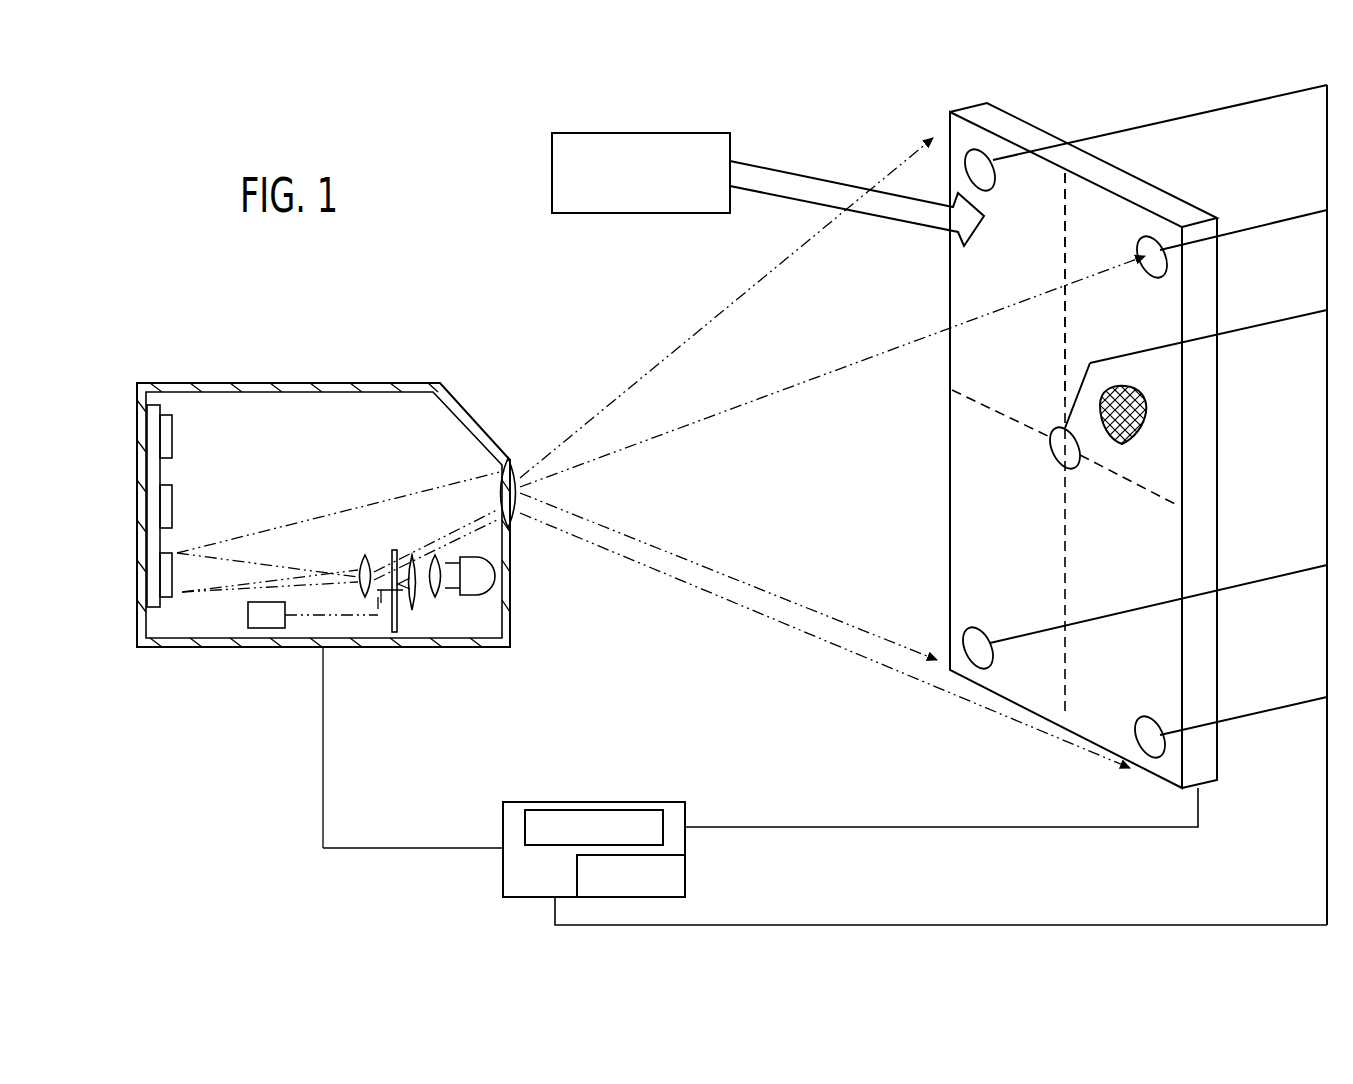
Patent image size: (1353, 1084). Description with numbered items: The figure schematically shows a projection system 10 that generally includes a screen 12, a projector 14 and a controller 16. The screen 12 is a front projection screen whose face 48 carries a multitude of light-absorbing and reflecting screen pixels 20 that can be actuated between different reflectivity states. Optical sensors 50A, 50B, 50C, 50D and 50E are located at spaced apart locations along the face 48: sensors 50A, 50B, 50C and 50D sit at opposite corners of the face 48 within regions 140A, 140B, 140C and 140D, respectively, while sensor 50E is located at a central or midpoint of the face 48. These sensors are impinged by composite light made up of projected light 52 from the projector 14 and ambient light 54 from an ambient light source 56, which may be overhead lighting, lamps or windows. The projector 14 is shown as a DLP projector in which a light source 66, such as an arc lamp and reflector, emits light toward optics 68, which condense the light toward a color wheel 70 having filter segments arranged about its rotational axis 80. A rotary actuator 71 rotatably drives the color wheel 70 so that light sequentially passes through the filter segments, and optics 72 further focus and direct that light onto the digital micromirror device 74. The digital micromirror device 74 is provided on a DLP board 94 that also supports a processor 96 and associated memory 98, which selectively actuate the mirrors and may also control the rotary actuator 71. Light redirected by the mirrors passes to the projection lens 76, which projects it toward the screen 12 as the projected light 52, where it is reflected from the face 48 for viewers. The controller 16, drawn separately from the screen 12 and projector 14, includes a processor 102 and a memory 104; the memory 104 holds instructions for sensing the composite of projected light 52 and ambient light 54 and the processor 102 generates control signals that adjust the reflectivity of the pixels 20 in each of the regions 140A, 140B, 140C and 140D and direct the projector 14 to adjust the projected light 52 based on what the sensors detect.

The projection system 10 is at (235, 322).
The screen 12 is at (1200, 615).
The projector 14 is at (137, 458).
The controller 16 is at (503, 825).
The screen pixel 20 is at (1157, 403).
The face 48 is at (1158, 473).
The sensor 50A is at (985, 172).
The sensor 50B is at (1150, 272).
The sensor 50C is at (978, 648).
The sensor 50D is at (1148, 733).
The sensor 50E is at (1070, 468).
The projected light 52 is at (723, 600).
The ambient light 54 is at (797, 172).
The ambient light source 56 is at (552, 178).
The light source 66 is at (477, 555).
The optics 68 is at (440, 597).
The color wheel 70 is at (390, 627).
The rotary actuator 71 is at (250, 610).
The optics 72 is at (376, 552).
The digital micromirror device 74 is at (172, 578).
The projection lens 76 is at (503, 465).
The rotational axis 80 is at (412, 565).
The DLP board 94 is at (150, 405).
The processor 96 is at (172, 508).
The memory 98 is at (172, 442).
The processor 102 is at (552, 845).
The memory 104 is at (685, 878).
The region 140A is at (973, 378).
The region 140B is at (1158, 364).
The region 140C is at (973, 448).
The region 140D is at (1158, 545).